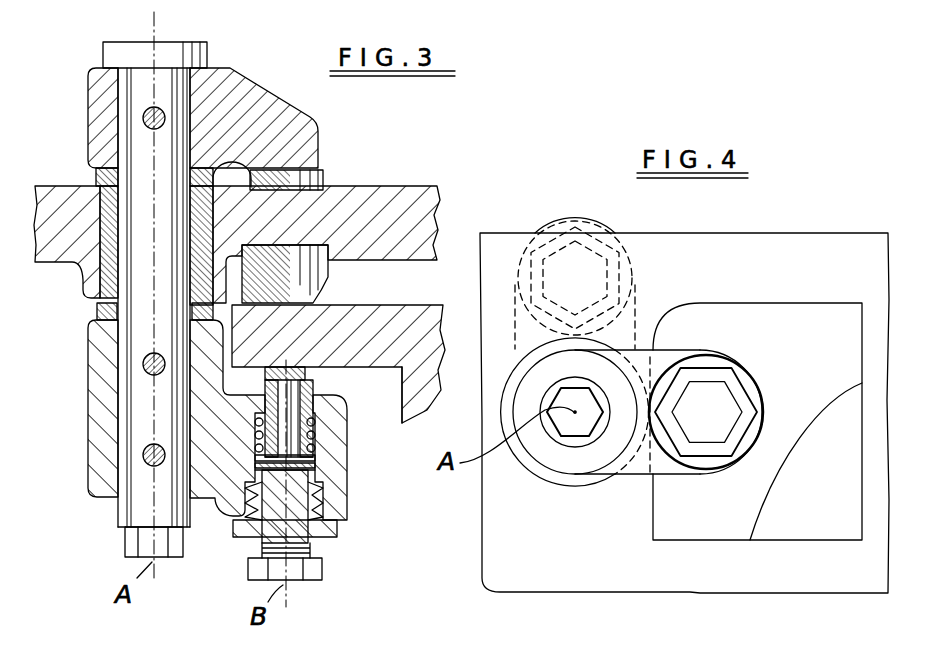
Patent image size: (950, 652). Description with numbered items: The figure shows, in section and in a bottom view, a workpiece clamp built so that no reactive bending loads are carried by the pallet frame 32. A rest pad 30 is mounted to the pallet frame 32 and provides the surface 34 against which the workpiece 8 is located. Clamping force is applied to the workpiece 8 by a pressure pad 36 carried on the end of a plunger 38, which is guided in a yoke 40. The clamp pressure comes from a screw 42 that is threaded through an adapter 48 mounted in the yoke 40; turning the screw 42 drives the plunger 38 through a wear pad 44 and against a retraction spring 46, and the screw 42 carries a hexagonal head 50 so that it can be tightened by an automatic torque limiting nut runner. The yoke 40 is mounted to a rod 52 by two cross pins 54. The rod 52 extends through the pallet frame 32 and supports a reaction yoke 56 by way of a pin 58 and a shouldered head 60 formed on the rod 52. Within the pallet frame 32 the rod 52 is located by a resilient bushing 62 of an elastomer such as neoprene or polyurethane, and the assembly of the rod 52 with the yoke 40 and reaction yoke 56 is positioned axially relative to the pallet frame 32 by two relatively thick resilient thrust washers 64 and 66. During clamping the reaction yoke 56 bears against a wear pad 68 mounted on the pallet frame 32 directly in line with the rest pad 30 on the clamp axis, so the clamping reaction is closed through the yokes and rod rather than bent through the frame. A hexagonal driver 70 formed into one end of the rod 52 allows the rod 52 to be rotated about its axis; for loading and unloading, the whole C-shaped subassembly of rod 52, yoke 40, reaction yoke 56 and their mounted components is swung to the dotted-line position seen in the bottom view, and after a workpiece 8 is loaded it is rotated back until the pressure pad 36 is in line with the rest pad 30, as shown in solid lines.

In FIG. 3, the workpiece 8 is at (418, 410).
In FIG. 4, the workpiece 8 is at (762, 542).
In FIG. 3, the rest pad 30 is at (330, 277).
In FIG. 3, the pallet frame 32 is at (412, 186).
In FIG. 4, the pallet frame 32 is at (484, 538).
In FIG. 3, the surface 34 is at (335, 300).
In FIG. 3, the pressure pad 36 is at (306, 374).
In FIG. 3, the plunger 38 is at (330, 396).
In FIG. 3, the yoke 40 is at (347, 436).
In FIG. 4, the yoke 40 is at (640, 474).
In FIG. 3, the screw 42 is at (310, 545).
In FIG. 3, the wear pad 44 is at (330, 477).
In FIG. 3, the retraction spring 46 is at (316, 448).
In FIG. 3, the adapter 48 is at (338, 528).
In FIG. 4, the adapter 48 is at (740, 388).
In FIG. 3, the hexagonal head 50 is at (322, 575).
In FIG. 4, the hexagonal head 50 is at (738, 432).
In FIG. 3, the rod 52 is at (116, 512).
In FIG. 4, the rod 52 is at (567, 447).
In FIG. 3, the cross pins 54 is at (143, 370).
In FIG. 3, the reaction yoke 56 is at (100, 115).
In FIG. 3, the pin 58 is at (143, 124).
In FIG. 3, the shouldered head 60 is at (103, 53).
In FIG. 3, the resilient bushing 62 is at (105, 273).
In FIG. 3, the resilient thrust washer 64 is at (97, 310).
In FIG. 3, the resilient thrust washer 66 is at (100, 180).
In FIG. 3, the wear pad 68 is at (323, 178).
In FIG. 3, the hexagonal driver 70 is at (123, 550).
In FIG. 4, the hexagonal driver 70 is at (553, 437).